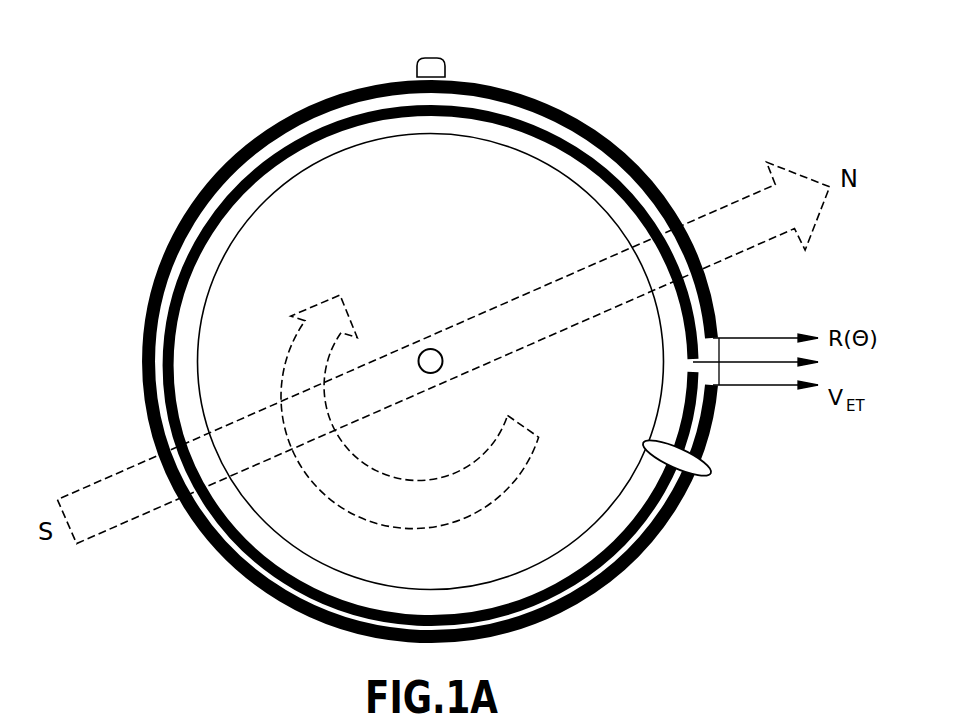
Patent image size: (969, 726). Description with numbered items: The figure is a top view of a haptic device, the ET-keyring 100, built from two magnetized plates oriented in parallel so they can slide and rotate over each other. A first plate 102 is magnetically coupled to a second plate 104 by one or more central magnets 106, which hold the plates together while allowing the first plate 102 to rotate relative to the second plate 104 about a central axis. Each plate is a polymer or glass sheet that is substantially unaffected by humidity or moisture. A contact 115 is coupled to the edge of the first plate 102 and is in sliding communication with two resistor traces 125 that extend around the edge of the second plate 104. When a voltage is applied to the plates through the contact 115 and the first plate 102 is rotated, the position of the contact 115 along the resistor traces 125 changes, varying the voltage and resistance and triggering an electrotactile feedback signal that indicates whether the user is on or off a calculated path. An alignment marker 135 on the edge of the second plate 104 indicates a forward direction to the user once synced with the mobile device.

The ET-keyring 100 is at (623, 95).
The first plate 102 is at (353, 277).
The second plate 104 is at (188, 308).
The central magnet 106 is at (418, 362).
The contact 115 is at (725, 484).
The resistor traces 125 is at (560, 600).
The alignment marker 135 is at (430, 58).